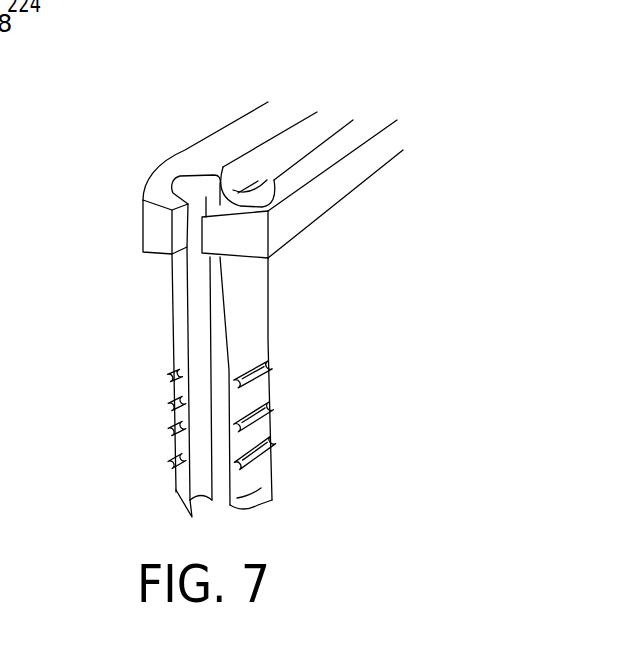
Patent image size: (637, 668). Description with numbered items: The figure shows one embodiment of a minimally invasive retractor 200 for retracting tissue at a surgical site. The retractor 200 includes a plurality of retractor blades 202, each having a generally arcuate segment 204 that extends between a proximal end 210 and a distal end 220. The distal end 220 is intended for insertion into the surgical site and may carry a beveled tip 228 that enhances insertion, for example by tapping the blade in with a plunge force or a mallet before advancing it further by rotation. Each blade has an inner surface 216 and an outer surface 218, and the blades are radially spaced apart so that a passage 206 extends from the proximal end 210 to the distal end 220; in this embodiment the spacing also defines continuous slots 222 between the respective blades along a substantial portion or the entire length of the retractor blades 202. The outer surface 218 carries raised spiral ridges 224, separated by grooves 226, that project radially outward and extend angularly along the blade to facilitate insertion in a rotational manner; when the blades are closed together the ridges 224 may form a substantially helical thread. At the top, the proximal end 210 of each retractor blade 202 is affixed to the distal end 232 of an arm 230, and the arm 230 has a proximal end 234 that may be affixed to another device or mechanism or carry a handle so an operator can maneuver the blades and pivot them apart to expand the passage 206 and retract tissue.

The retractor 200 is at (92, 197).
The retractor blades 202 is at (118, 372).
The arcuate segment 204 is at (178, 345).
The passage 206 is at (218, 345).
The proximal end 210 is at (180, 255).
The inner surface 216 is at (202, 192).
The outer surface 218 is at (255, 307).
The distal end 220 is at (185, 515).
The continuous slots 222 is at (213, 423).
The raised ridges 224 is at (273, 457).
The grooves 226 is at (168, 413).
The beveled tip 228 is at (247, 505).
The arms 230 is at (187, 167).
The distal end of arm 232 is at (160, 222).
The proximal end of arm 234 is at (353, 120).